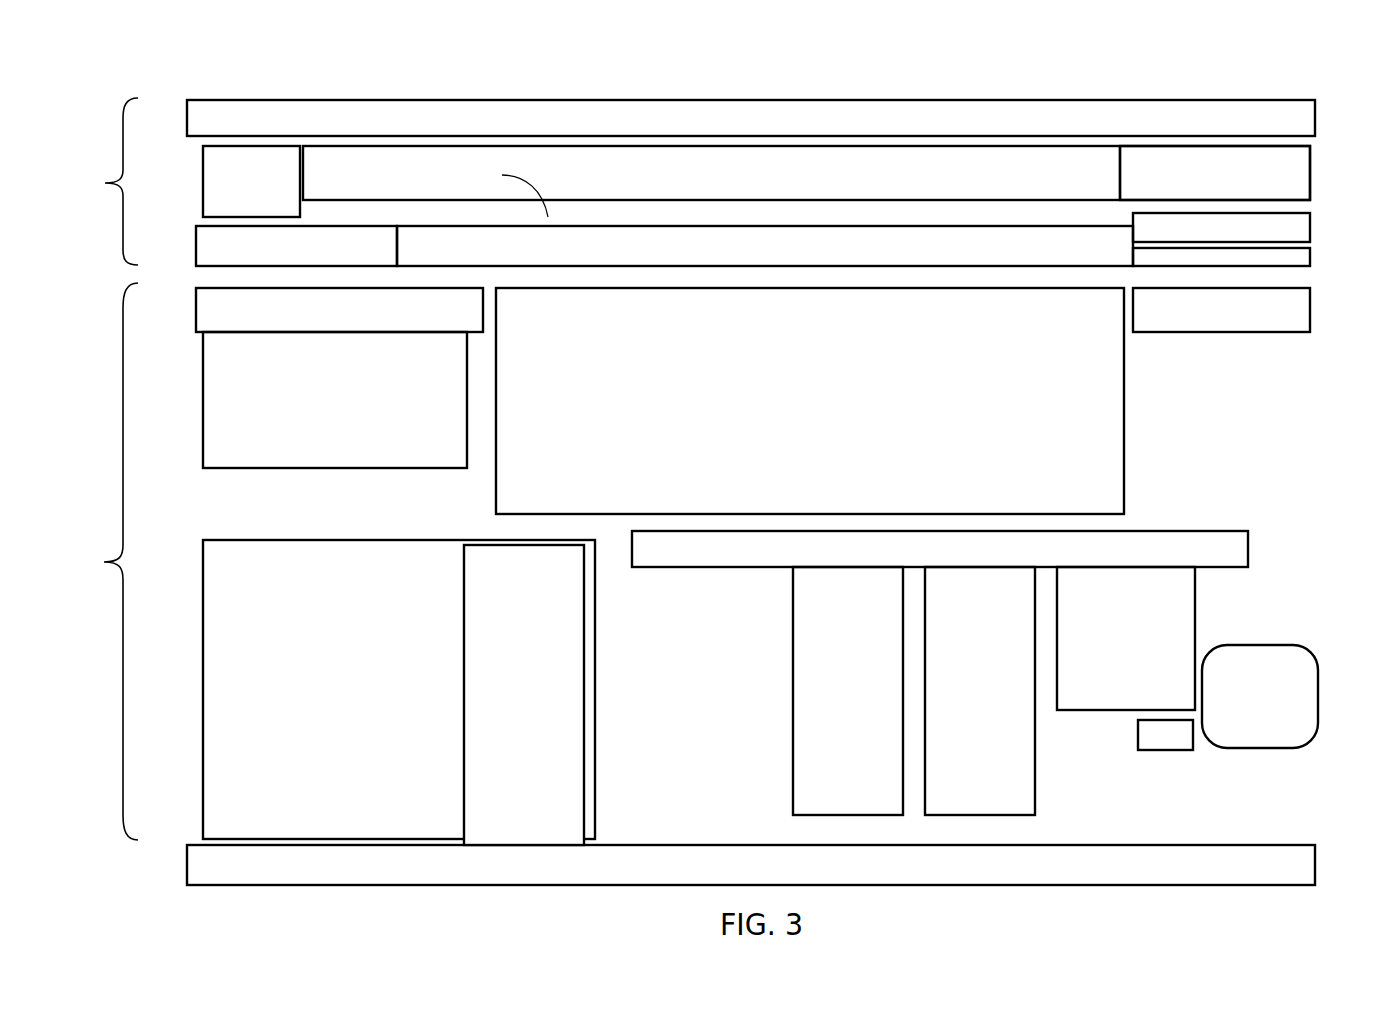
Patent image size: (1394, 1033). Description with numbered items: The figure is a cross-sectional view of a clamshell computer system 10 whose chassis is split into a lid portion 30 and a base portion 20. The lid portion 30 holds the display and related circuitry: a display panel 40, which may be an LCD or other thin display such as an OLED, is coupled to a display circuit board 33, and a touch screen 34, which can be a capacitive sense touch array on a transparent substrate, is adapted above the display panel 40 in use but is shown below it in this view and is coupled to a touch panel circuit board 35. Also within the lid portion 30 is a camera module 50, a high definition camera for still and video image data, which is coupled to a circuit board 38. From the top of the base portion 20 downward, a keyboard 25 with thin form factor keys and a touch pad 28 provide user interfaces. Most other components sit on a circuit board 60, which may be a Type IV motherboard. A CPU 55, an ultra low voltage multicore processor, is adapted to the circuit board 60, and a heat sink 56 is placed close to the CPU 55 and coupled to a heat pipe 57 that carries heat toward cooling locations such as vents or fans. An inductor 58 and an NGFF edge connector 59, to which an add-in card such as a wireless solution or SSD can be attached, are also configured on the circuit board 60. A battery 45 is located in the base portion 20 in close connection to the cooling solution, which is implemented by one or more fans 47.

The computing device 10 is at (236, 82).
The base portion 20 is at (696, 584).
The lid portion 30 is at (106, 181).
The display circuit board 33 is at (1312, 172).
The touch screen 34 is at (560, 261).
The touch panel circuit board 35 is at (1312, 227).
The circuit board 38 is at (197, 243).
The display panel 40 is at (712, 143).
The camera module 50 is at (202, 180).
The touch pad 28 is at (322, 428).
The keyboard 25 is at (797, 428).
The battery 45 is at (322, 720).
The fan 47 is at (585, 690).
The circuit board 60 is at (1175, 545).
The NGFF edge connector 59 is at (792, 692).
The inductor 58 is at (967, 720).
The CPU 55 is at (1107, 713).
The heat sink 56 is at (1165, 750).
The heat pipe 57 is at (1288, 645).